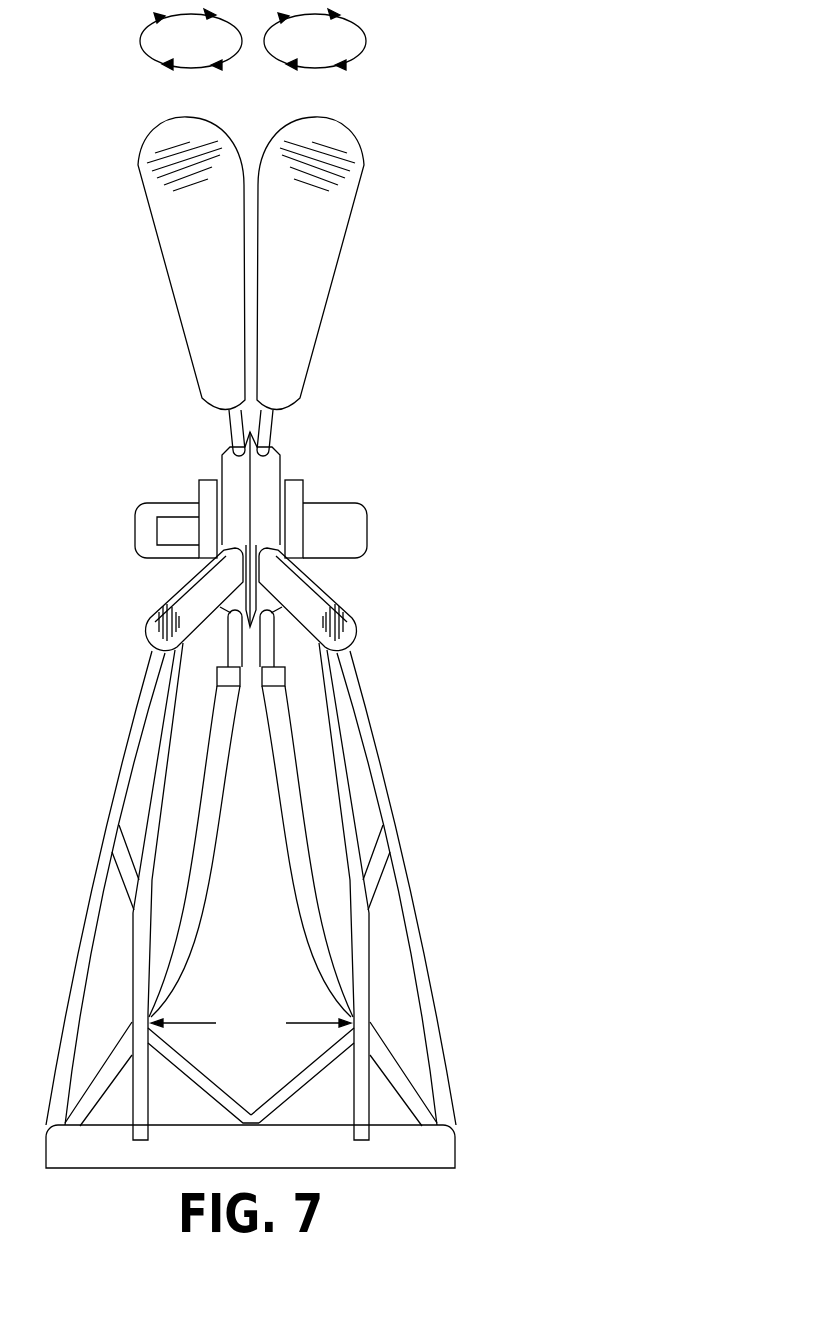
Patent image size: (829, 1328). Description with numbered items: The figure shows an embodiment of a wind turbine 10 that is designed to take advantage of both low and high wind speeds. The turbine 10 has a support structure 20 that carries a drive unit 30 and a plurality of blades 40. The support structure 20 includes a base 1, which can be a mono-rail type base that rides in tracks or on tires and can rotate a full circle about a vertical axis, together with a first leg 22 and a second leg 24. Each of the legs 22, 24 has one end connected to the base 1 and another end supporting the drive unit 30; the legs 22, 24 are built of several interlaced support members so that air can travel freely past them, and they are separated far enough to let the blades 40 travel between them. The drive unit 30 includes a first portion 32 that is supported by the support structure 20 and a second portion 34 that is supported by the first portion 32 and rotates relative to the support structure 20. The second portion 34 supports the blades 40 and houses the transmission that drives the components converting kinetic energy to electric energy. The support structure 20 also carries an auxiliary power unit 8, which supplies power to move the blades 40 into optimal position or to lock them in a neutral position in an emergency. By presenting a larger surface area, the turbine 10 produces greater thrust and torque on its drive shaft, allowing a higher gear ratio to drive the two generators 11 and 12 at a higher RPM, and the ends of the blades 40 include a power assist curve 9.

The base 1 is at (457, 1153).
The auxiliary power unit 8 is at (167, 526).
The power assist curve 9 is at (296, 884).
The wind turbine 10 is at (424, 70).
The generator 11 is at (155, 543).
The generator 12 is at (347, 544).
The support structure 20 is at (403, 718).
The first leg 22 is at (397, 820).
The second leg 24 is at (108, 812).
The drive unit 30 is at (311, 453).
The first portion 32 is at (298, 479).
The second portion 34 is at (282, 455).
The blades 40 is at (472, 252).